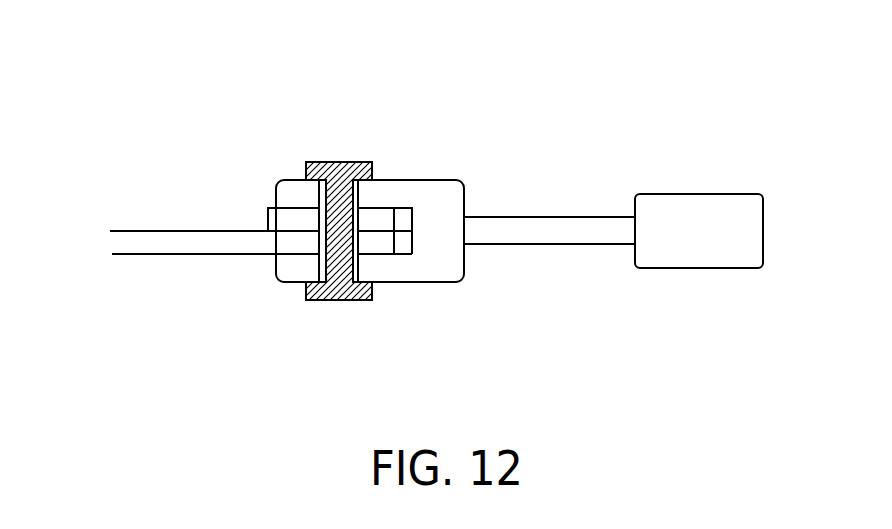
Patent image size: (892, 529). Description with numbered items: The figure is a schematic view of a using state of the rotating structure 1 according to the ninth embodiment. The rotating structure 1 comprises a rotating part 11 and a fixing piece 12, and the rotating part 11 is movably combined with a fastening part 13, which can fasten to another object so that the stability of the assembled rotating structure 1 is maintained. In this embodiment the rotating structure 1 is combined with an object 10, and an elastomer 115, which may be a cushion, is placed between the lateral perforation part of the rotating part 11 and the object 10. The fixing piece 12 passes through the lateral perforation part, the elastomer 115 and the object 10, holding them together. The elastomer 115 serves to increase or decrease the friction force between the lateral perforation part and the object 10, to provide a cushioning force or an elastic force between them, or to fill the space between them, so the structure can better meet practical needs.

The rotating structure 1 is at (436, 197).
The object 10 is at (267, 246).
The rotating part 11 is at (391, 192).
The fixing piece 12 is at (339, 299).
The fastening part 13 is at (707, 193).
The elastomer 115 is at (277, 220).